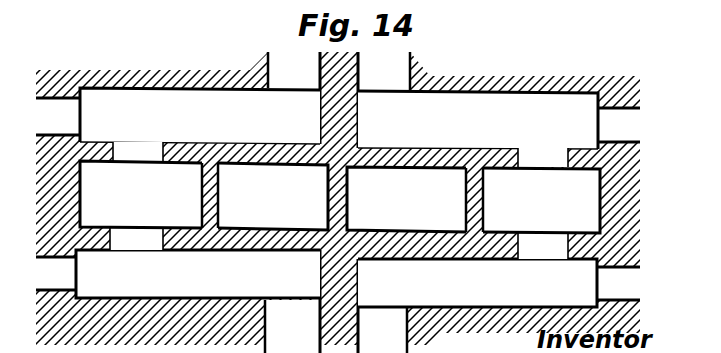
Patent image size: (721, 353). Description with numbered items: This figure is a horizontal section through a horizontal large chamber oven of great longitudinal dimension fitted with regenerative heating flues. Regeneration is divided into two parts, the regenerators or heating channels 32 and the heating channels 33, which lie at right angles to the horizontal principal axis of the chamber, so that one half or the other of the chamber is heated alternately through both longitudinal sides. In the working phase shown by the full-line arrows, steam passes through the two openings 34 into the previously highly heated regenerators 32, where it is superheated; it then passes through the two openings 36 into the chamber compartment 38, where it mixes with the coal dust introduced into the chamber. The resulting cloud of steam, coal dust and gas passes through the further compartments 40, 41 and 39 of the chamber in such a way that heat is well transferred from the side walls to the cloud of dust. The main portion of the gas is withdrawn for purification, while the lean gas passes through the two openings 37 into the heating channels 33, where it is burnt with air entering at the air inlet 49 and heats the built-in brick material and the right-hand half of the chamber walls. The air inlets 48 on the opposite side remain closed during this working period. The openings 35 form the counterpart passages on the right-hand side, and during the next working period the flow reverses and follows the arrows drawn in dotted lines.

The regenerator 32 is at (155, 146).
The heating channel 33 is at (516, 141).
The opening 34 is at (278, 128).
The right exhaust passage 35 is at (434, 107).
The opening 36 is at (152, 170).
The opening 37 is at (528, 182).
The chamber compartment 38 is at (141, 194).
The compartment 39 is at (541, 200).
The compartment 40 is at (378, 199).
The compartment 41 is at (406, 199).
The air inlet 48 is at (99, 113).
The air inlet 49 is at (583, 125).